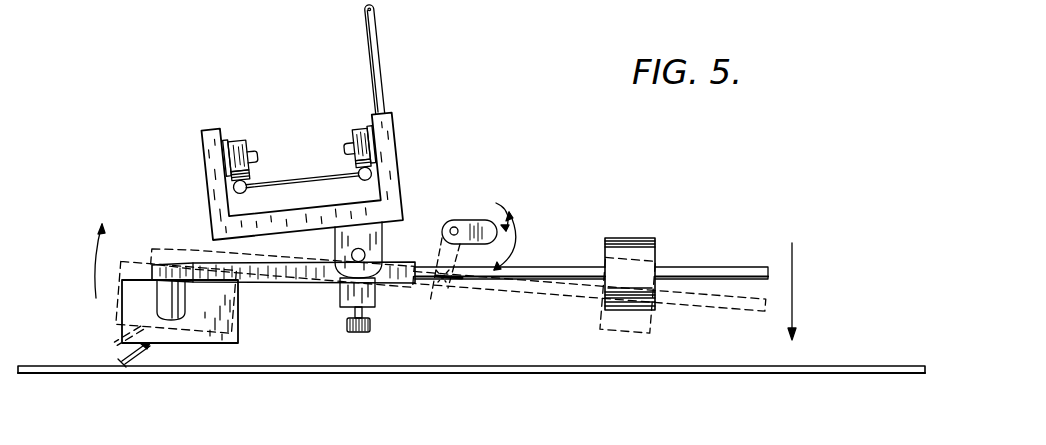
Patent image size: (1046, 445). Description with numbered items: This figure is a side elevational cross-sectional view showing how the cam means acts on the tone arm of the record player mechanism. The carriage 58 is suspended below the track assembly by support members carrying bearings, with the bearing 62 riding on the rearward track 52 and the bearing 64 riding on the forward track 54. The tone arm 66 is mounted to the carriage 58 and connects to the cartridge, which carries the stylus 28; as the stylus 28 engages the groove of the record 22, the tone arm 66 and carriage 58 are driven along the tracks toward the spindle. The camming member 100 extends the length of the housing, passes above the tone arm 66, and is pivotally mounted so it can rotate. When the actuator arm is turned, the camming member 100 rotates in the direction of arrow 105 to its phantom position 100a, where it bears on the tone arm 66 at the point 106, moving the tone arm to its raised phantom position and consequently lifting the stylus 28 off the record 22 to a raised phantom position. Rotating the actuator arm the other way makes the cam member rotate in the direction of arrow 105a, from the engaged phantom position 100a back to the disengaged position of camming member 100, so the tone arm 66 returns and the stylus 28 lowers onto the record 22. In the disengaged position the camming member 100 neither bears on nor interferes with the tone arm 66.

The record 22 is at (268, 375).
The stylus 28 is at (120, 354).
The rearward track 52 is at (364, 181).
The forward track 54 is at (236, 191).
The carriage 58 is at (277, 228).
The bearing 62 is at (357, 128).
The bearing 64 is at (240, 141).
The tone arm 66 is at (732, 268).
The camming member 100 is at (470, 222).
The phantom position of camming member 100a is at (436, 300).
The arrow 105 is at (513, 242).
The arrow 105a is at (500, 205).
The bearing point 106 is at (449, 279).